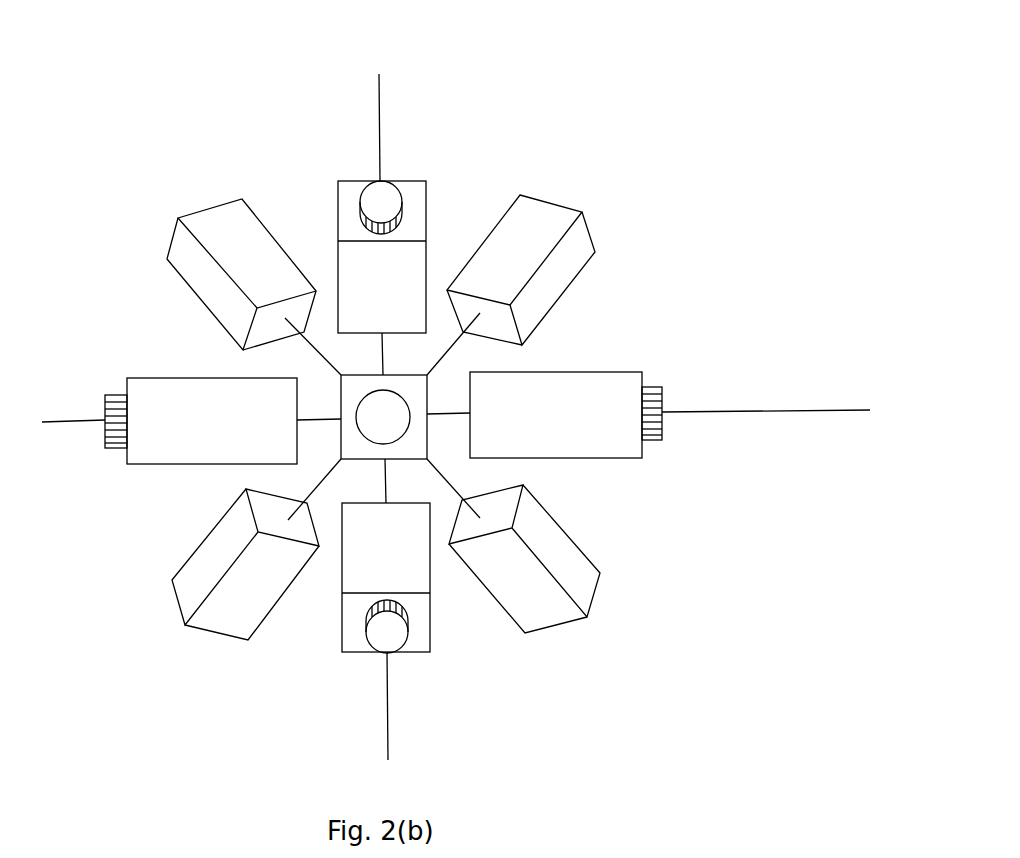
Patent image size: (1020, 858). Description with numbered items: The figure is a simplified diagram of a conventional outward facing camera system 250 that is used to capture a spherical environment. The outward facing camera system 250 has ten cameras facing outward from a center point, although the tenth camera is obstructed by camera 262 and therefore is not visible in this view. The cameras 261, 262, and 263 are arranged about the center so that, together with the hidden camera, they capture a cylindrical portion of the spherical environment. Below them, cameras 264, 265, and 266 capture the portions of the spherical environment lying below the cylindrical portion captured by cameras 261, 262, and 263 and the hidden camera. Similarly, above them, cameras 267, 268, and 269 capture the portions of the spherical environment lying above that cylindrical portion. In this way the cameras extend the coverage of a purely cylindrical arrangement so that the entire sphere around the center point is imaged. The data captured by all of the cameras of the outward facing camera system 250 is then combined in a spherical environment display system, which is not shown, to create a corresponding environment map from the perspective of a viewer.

The outward facing camera system 250 is at (447, 95).
The camera 261 is at (257, 434).
The camera 262 is at (430, 380).
The camera 263 is at (559, 427).
The camera 264 is at (281, 594).
The camera 265 is at (409, 561).
The camera 266 is at (539, 591).
The camera 267 is at (277, 274).
The camera 268 is at (406, 302).
The camera 269 is at (544, 257).